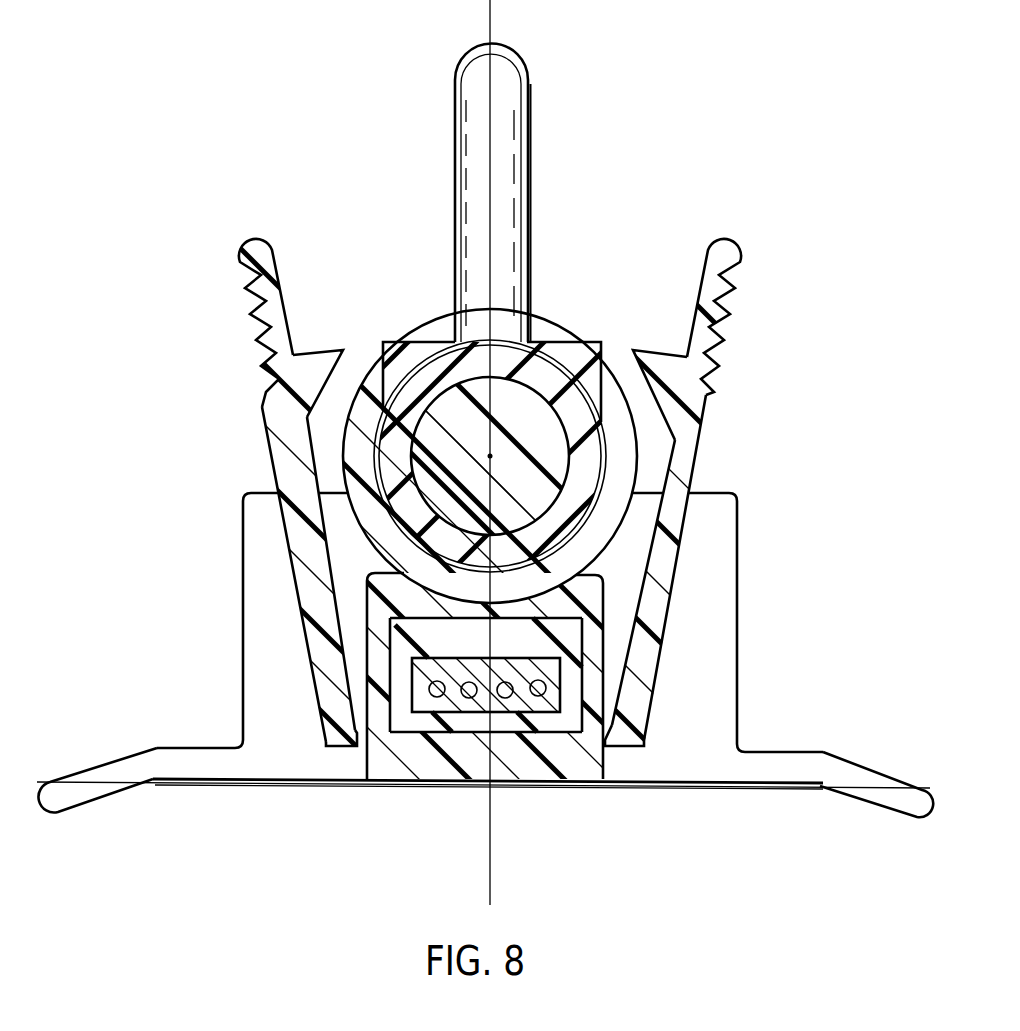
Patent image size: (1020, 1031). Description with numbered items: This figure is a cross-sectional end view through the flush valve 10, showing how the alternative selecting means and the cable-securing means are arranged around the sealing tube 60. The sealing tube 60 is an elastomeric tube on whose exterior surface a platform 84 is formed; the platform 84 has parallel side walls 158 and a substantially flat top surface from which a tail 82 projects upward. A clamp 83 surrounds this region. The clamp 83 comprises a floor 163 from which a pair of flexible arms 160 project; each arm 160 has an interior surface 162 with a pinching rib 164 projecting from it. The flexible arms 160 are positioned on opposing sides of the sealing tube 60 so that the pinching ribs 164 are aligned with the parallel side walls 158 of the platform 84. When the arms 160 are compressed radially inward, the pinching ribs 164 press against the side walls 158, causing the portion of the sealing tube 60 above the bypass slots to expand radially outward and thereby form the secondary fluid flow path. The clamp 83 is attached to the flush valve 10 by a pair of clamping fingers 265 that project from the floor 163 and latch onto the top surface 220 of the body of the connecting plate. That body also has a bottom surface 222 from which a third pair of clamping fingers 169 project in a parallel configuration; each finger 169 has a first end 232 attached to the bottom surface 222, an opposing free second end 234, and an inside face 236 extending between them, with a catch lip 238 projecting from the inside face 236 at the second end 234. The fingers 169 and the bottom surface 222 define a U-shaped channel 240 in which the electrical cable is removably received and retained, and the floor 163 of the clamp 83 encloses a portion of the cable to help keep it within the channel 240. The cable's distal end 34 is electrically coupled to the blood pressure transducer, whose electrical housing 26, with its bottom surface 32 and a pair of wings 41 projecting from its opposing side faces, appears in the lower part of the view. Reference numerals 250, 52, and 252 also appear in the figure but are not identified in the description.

The flush valve 10 is at (366, 215).
The central axis 250 is at (493, 17).
The tail 82 is at (505, 135).
The shaft 52 is at (510, 515).
The platform 84 is at (430, 356).
The sealing tube 60 is at (590, 462).
The parallel side walls 158 is at (383, 358).
The interior surface 162 is at (265, 283).
The pinching rib 164 is at (307, 357).
The flexible arms 160 is at (283, 448).
The clamping fingers 265 is at (362, 725).
The electrical housing 26 is at (705, 610).
The wings 41 is at (158, 760).
The bottom surface 32 is at (258, 785).
The base surface 252 is at (657, 787).
The first end 232 is at (400, 665).
The clamp 83 is at (640, 660).
The inside face 236 is at (434, 758).
The catch lip 238 is at (597, 730).
The top surface 220 is at (545, 605).
The third pair of clamping fingers 169 is at (393, 682).
The bottom surface 222 is at (505, 722).
The second end 234 is at (377, 708).
The U-shaped channel 240 is at (565, 658).
The distal end 34 is at (562, 720).
The floor 163 is at (431, 768).